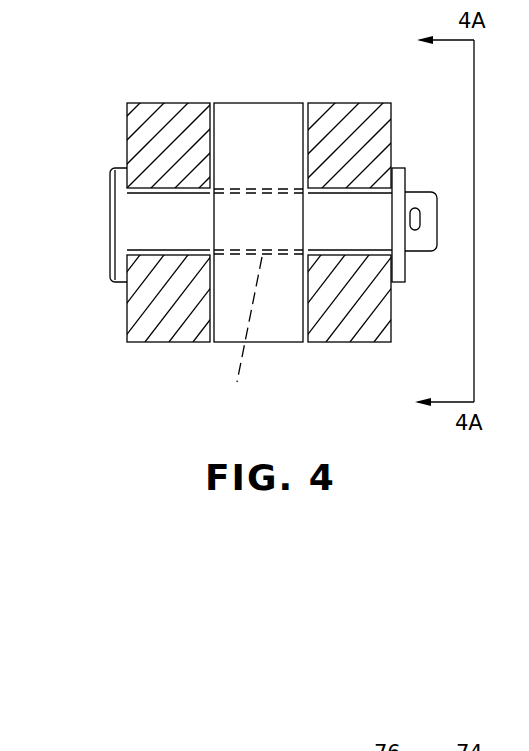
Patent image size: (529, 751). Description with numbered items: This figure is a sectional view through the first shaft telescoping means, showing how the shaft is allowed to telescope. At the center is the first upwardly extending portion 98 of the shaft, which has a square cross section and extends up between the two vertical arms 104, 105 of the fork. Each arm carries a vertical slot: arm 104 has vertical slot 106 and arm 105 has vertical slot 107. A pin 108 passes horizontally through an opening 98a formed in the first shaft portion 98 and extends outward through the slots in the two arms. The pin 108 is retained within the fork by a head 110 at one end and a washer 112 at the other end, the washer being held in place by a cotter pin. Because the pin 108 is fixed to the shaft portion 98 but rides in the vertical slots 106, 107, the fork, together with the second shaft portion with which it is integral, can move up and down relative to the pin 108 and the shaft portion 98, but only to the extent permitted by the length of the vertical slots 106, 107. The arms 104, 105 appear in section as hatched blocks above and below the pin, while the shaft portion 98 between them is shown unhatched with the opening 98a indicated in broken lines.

The first upwardly extending portion 98 is at (258, 128).
The opening 98a is at (242, 333).
The vertical arm 104 is at (343, 120).
The vertical arm 105 is at (163, 118).
The vertical slot 106 is at (369, 257).
The vertical slot 107 is at (152, 258).
The pin 108 is at (330, 215).
The head 110 is at (122, 233).
The washer 112 is at (400, 262).